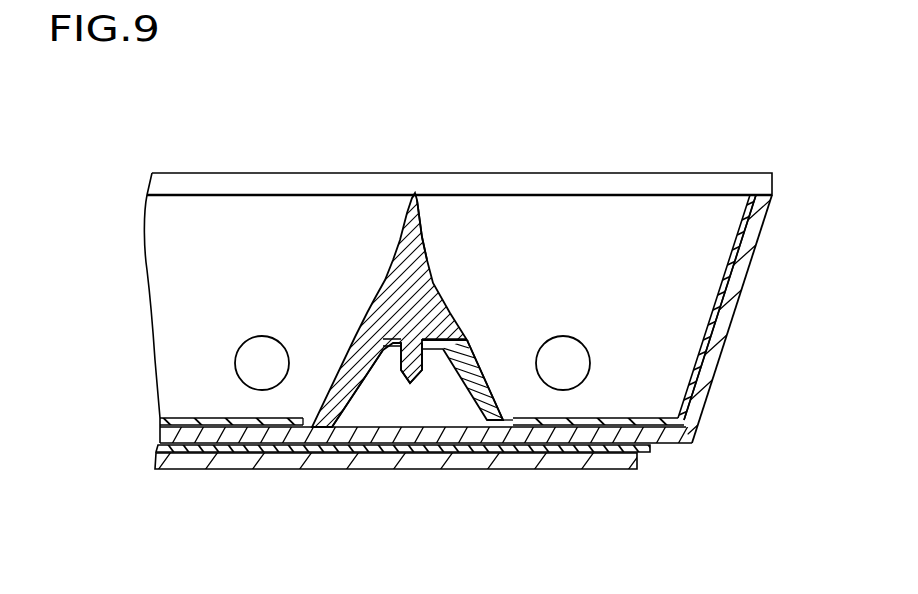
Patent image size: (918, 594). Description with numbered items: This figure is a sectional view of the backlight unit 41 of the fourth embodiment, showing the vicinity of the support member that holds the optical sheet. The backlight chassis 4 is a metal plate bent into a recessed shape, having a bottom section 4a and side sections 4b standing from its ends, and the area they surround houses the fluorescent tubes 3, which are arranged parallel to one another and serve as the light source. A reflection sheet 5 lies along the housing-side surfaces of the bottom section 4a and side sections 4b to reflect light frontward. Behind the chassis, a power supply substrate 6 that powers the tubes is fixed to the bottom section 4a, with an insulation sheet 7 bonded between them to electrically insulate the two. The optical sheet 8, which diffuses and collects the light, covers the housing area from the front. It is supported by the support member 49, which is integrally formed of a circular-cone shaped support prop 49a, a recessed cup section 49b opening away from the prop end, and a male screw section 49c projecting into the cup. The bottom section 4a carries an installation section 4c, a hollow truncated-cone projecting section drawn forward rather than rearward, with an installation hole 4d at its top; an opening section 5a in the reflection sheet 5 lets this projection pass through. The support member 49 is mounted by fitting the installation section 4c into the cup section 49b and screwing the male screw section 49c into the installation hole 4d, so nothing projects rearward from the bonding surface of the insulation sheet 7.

The backlight unit 41 is at (736, 143).
The optical sheet 8 is at (764, 186).
The fluorescent tubes 3 is at (265, 336).
The support member 49 is at (393, 257).
The support prop 49a is at (423, 237).
The cup section 49b is at (480, 352).
The male screw section 49c is at (404, 379).
The backlight chassis 4 is at (722, 337).
The bottom section 4a is at (661, 438).
The side sections 4b is at (708, 373).
The installation section 4c is at (466, 414).
The installation hole 4d is at (397, 339).
The reflection sheet 5 is at (733, 284).
The opening section 5a is at (312, 429).
The power supply substrate 6 is at (548, 470).
The insulation sheet 7 is at (590, 453).